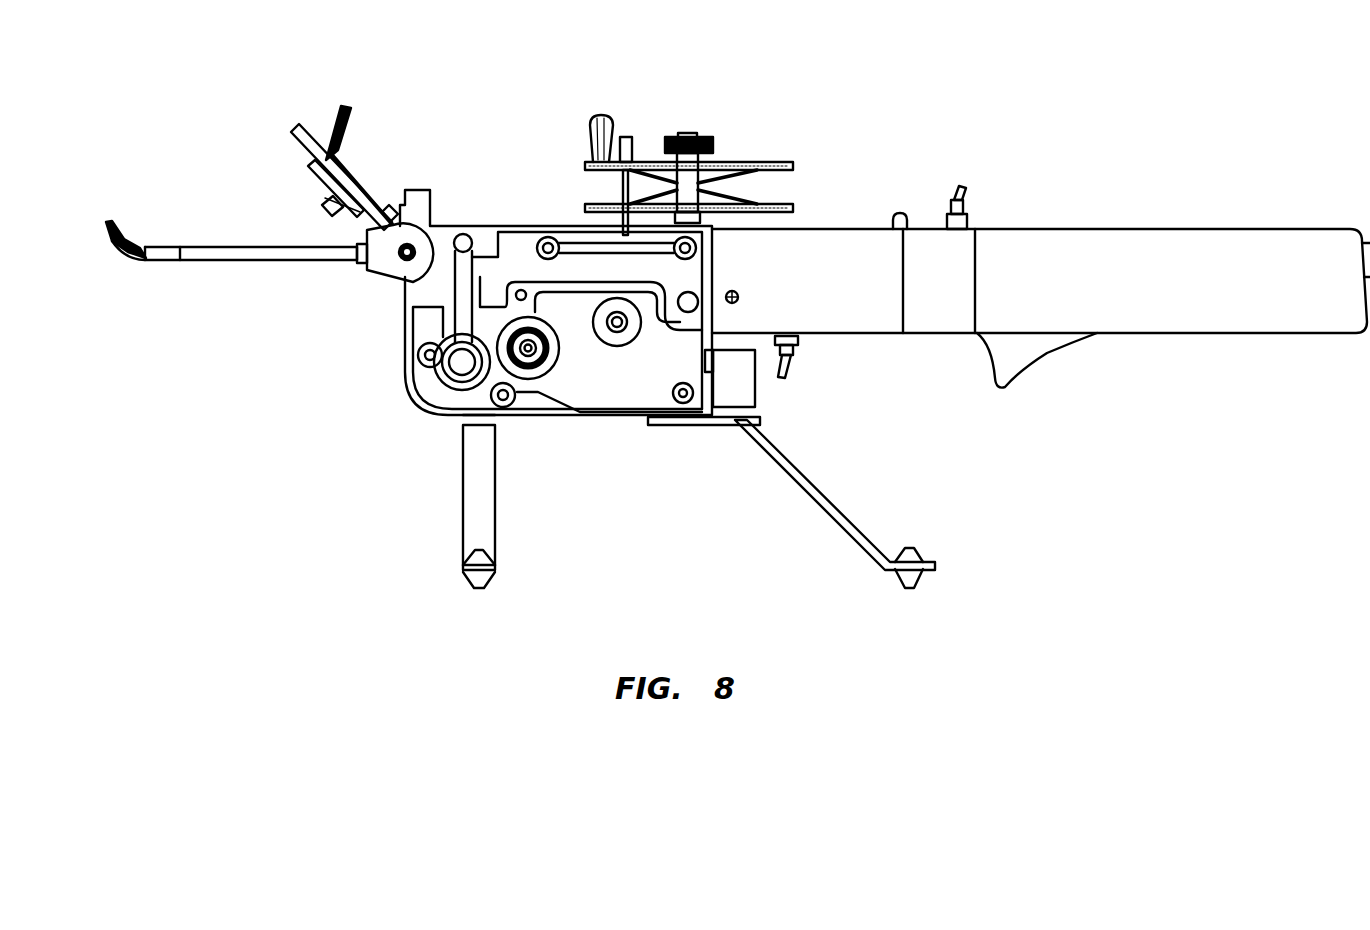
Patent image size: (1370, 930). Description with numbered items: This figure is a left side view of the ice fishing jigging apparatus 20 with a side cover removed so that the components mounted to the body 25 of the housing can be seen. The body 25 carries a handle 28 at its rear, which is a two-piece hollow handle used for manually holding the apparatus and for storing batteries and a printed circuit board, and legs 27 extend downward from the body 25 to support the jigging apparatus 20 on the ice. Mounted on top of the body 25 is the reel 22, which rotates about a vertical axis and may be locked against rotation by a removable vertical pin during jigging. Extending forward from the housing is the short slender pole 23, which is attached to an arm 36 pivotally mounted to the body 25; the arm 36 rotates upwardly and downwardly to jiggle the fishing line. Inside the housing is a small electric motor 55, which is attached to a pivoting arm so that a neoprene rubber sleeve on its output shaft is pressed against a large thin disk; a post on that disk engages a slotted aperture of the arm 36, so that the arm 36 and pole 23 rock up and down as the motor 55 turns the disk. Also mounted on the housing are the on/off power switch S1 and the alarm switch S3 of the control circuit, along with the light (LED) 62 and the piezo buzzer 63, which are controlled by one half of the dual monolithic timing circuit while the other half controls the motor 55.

The ice fishing jigging apparatus 20 is at (348, 458).
The reel 22 is at (710, 166).
The slender short pole 23 is at (252, 184).
The body 25 is at (556, 275).
The legs 27 is at (656, 501).
The handle 28 is at (1041, 273).
The arm 36 is at (373, 285).
The electric motor 55 is at (557, 411).
The light (LED) 62 is at (874, 191).
The piezo buzzer 63 is at (706, 428).
The on/off power switch S1 is at (994, 170).
The alarm switch S3 is at (815, 385).